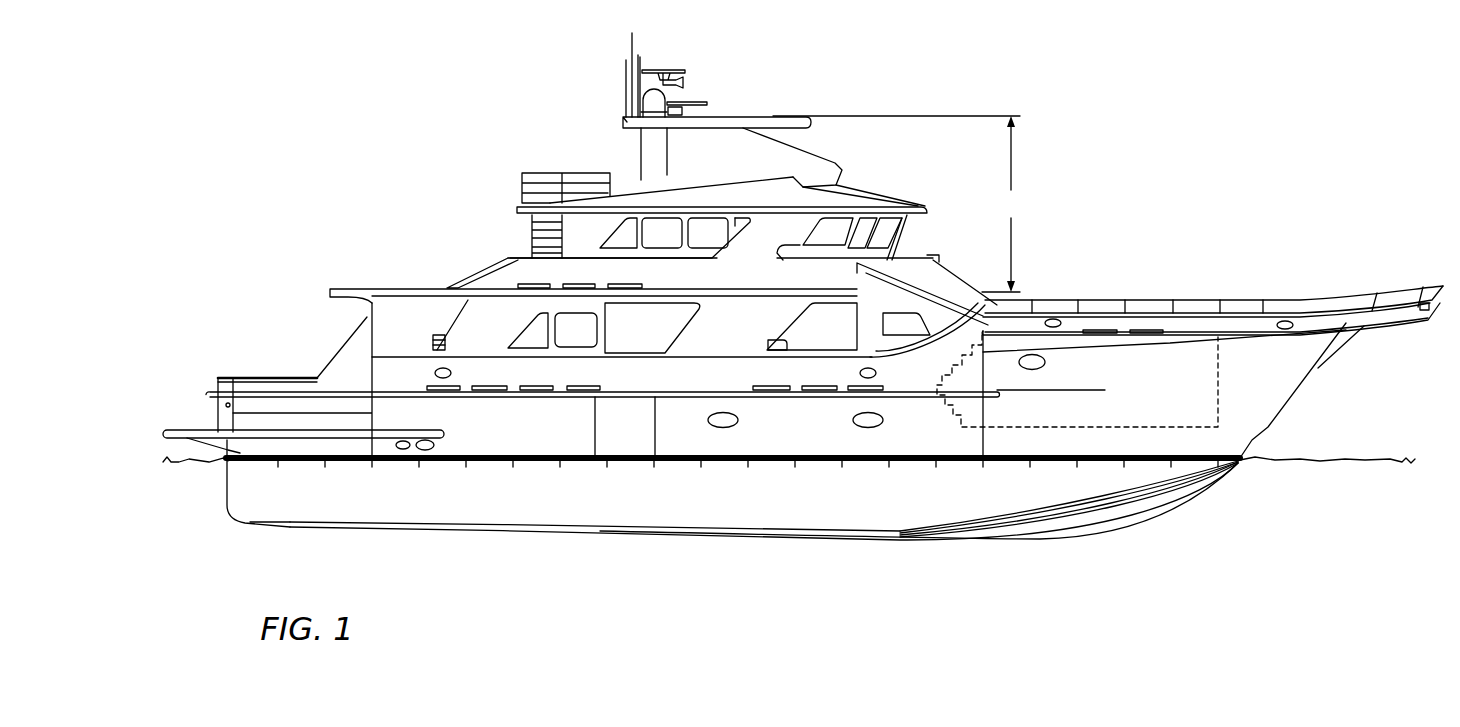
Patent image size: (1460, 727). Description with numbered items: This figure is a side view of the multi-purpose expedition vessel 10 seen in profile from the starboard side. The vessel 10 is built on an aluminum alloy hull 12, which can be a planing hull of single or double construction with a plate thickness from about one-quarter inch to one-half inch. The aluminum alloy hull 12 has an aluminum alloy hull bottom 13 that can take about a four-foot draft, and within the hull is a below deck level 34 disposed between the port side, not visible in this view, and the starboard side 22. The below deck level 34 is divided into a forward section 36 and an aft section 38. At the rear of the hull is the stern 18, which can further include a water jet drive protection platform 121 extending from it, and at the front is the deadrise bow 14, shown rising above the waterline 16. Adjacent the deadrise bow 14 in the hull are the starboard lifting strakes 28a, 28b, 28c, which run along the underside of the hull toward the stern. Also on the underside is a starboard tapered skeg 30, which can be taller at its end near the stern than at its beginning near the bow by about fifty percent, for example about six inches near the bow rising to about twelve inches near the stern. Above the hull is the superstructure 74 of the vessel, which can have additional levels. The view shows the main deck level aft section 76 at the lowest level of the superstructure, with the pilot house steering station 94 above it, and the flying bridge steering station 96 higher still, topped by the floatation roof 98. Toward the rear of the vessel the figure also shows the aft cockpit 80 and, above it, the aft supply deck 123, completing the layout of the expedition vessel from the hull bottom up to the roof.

The multi-purpose expedition vessel 10 is at (424, 93).
The aluminum alloy hull 12 is at (752, 512).
The aluminum alloy hull bottom 13 is at (683, 531).
The deadrise bow 14 is at (1318, 360).
The waterline 16 is at (1370, 462).
The stern 18 is at (213, 403).
The starboard side 22 is at (817, 441).
The starboard lifting strake 28a is at (1215, 470).
The starboard lifting strake 28b is at (1170, 497).
The starboard lifting strake 28c is at (1070, 540).
The starboard tapered skeg 30 is at (291, 524).
The below deck level 34 is at (396, 409).
The forward section 36 is at (1105, 428).
The aft section 38 is at (487, 433).
The superstructure 74 is at (899, 204).
The main deck level aft section 76 is at (473, 322).
The aft cockpit 80 is at (253, 375).
The pilot house steering station 94 is at (895, 233).
The flying bridge steering station 96 is at (828, 148).
The floatation roof 98 is at (753, 117).
The water jet drive protection platform 121 is at (166, 433).
The aft supply deck 123 is at (367, 287).